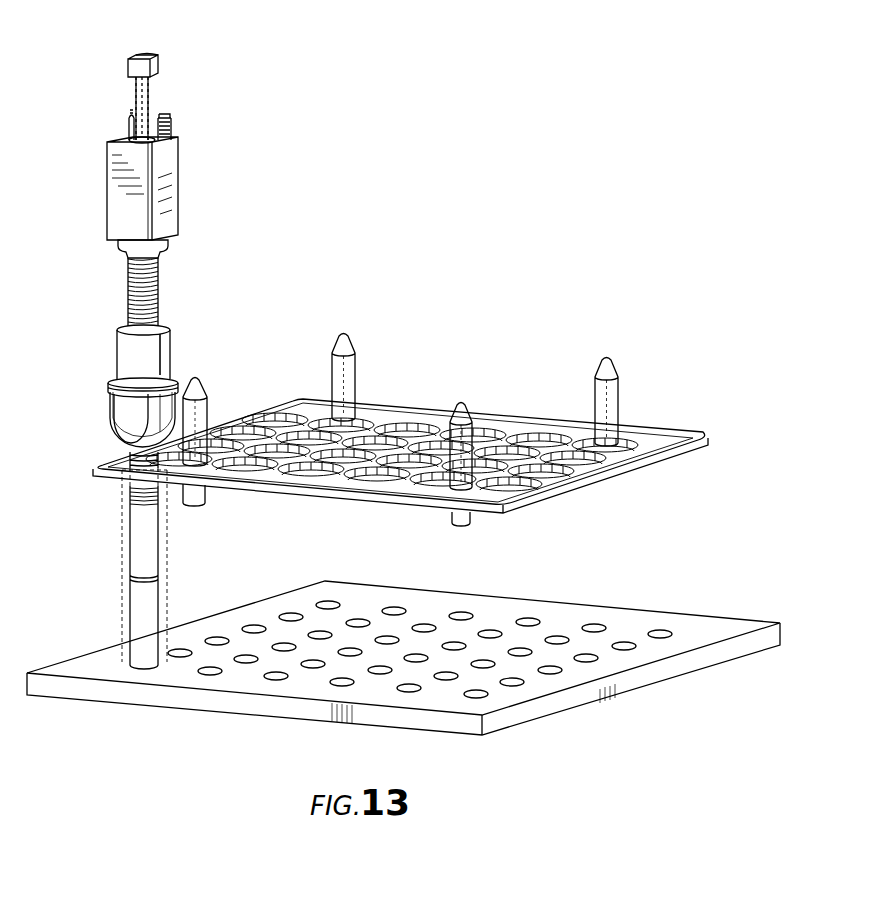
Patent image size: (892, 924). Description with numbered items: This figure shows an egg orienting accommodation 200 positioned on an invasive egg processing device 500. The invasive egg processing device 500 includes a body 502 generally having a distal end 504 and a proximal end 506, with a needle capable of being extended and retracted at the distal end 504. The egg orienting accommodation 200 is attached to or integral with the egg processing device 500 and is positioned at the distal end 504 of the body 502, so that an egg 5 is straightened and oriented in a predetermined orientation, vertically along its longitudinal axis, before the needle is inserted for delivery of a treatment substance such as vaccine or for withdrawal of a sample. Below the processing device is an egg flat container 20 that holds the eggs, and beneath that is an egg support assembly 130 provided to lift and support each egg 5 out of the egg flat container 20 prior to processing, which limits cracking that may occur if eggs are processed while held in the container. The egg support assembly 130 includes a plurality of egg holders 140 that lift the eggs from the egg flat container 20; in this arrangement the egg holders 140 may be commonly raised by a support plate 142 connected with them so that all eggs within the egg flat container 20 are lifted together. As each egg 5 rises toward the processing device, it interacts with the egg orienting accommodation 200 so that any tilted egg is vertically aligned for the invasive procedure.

The invasive egg processing device 500 is at (80, 197).
The proximal end 506 is at (222, 146).
The distal end 504 is at (97, 357).
The body 502 is at (153, 355).
The egg orienting accommodation 200 is at (99, 410).
The egg 5 is at (125, 424).
The egg flat container 20 is at (682, 452).
The egg holder 140 is at (107, 582).
The egg support assembly 130 is at (141, 731).
The support plate 142 is at (609, 666).